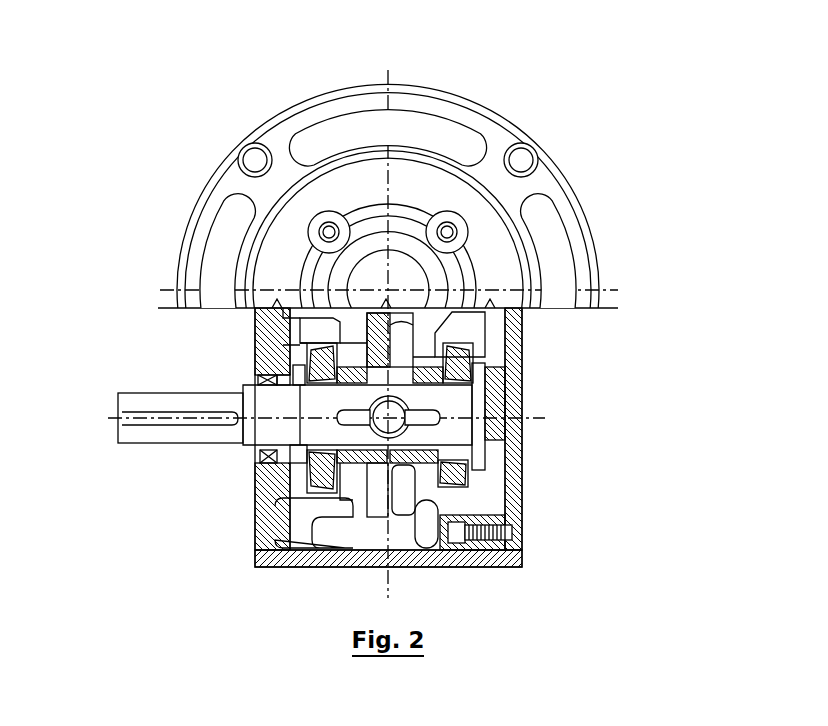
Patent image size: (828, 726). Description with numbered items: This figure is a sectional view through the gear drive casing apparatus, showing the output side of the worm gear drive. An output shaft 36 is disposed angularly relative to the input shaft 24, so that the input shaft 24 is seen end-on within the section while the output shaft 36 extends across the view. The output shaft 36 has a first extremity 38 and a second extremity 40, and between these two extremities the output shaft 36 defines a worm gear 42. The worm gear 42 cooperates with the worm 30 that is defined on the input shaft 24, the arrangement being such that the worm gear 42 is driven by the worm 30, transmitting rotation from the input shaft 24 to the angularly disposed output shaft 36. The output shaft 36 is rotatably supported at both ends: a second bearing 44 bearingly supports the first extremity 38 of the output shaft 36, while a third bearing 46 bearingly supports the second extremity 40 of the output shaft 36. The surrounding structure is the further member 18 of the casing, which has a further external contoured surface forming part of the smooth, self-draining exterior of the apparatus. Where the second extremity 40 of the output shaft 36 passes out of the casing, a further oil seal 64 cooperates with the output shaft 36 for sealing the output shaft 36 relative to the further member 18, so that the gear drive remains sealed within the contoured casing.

The further member 18 is at (510, 342).
The input shaft 24 is at (372, 263).
The worm 30 is at (383, 318).
The output shaft 36 is at (258, 432).
The first extremity 38 is at (483, 437).
The second extremity 40 is at (158, 437).
The worm gear 42 is at (380, 510).
The second bearing 44 is at (460, 466).
The third bearing 46 is at (322, 463).
The further oil seal 64 is at (265, 356).